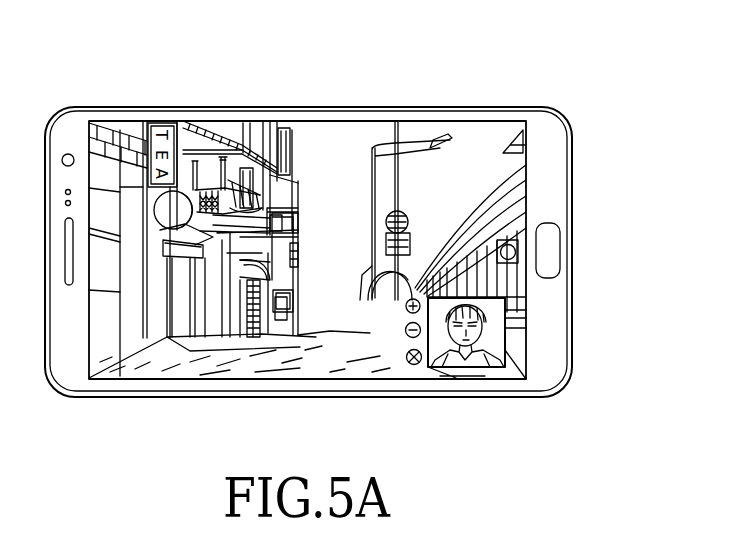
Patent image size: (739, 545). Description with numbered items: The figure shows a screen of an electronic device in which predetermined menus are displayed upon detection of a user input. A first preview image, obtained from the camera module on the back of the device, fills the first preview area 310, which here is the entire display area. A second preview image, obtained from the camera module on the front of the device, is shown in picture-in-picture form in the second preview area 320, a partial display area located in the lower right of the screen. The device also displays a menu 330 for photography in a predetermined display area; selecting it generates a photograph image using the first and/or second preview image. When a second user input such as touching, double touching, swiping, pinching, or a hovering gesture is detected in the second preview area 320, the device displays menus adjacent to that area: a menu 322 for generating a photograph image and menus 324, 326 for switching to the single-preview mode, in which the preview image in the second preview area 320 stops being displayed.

The first preview area 310 is at (527, 171).
The second preview area 320 is at (506, 320).
The menu for generating a photograph image 322 is at (378, 309).
The menu for switching to the single-preview mode 324 is at (405, 333).
The menu for switching to the single-preview mode 326 is at (406, 357).
The menu for photography 330 is at (524, 252).